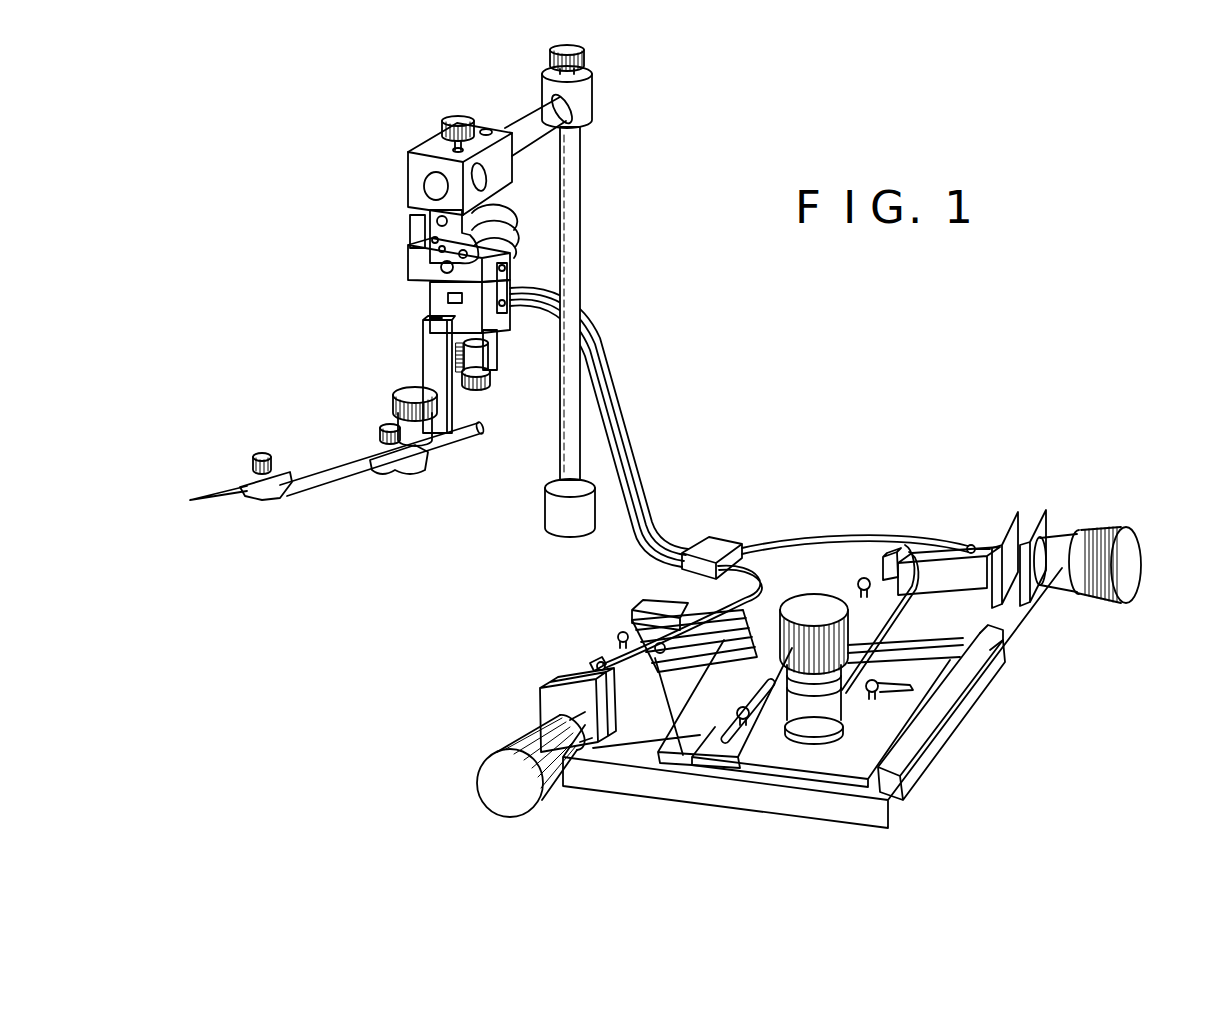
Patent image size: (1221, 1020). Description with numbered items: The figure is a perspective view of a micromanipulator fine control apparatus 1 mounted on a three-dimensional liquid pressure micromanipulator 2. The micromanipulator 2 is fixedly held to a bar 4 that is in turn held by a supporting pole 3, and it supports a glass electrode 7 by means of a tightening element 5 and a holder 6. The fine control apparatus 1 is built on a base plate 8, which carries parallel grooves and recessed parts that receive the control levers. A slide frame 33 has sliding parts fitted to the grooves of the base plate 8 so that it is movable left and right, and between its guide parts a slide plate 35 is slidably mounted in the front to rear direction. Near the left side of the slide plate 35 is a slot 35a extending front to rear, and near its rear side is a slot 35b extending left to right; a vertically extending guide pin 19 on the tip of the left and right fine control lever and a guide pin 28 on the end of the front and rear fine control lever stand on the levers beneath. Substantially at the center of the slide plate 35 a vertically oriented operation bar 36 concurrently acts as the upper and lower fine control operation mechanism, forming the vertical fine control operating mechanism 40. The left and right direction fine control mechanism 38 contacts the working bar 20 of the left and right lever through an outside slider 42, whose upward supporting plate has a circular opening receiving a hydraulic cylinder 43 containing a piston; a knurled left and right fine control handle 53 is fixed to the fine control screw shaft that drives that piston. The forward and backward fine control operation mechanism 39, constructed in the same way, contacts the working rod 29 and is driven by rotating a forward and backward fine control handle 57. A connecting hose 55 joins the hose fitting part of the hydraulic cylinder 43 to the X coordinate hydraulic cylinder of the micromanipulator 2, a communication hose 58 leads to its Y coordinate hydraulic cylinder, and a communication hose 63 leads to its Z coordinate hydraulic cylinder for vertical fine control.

The micromanipulator fine control apparatus 1 is at (823, 448).
The three-dimensional liquid pressure micromanipulator 2 is at (429, 143).
The supporting pole 3 is at (582, 268).
The bar 4 is at (530, 118).
The tightening element 5 is at (426, 344).
The holder 6 is at (340, 460).
The glass electrode 7 is at (229, 490).
The base plate 8 is at (1023, 623).
The guide pin 19 is at (725, 705).
The working bar 20 is at (886, 552).
The guide pin 28 is at (883, 685).
The working rod 29 is at (622, 632).
The slide frame 33 is at (975, 667).
The slide plate 35 is at (832, 760).
The slot 35a is at (713, 705).
The slot 35b is at (925, 683).
The operation bar 36 is at (810, 724).
The left and right direction fine control mechanism 38 is at (1034, 502).
The forward and backward fine control operation mechanism 39 is at (537, 657).
The vertical fine control operating mechanism 40 is at (773, 730).
The outside slider 42 is at (596, 657).
The hydraulic cylinder 43 is at (552, 672).
The left and right fine control handle 53 is at (1139, 558).
The connecting hose 55 is at (948, 541).
The forward and backward fine control handle 57 is at (490, 790).
The communication hose 58 is at (757, 583).
The communication hose 63 is at (900, 552).